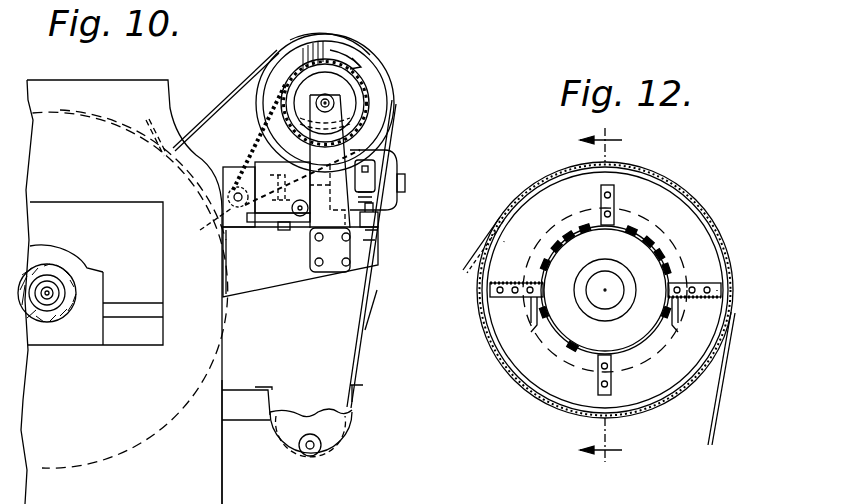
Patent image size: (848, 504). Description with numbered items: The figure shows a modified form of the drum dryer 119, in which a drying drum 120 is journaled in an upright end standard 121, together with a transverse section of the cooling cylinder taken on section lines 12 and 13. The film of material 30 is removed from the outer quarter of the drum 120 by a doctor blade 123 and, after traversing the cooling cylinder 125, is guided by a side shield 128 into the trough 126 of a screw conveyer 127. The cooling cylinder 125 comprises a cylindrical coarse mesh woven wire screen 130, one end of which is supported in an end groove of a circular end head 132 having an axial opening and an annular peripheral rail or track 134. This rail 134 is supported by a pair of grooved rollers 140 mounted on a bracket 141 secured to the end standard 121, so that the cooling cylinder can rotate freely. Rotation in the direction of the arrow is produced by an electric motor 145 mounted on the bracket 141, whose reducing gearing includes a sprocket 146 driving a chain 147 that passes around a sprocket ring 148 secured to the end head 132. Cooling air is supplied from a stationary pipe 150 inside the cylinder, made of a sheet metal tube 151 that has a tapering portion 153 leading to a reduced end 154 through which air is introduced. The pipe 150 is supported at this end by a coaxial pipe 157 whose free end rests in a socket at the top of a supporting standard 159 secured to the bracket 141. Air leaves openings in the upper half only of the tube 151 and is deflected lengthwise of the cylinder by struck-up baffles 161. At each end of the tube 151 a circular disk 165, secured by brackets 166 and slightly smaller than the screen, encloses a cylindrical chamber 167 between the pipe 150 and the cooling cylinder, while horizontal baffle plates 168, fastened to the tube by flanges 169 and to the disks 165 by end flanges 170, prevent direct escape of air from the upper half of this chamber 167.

In FIG. 10, the section line 12 is at (303, 442).
In FIG. 12, the section line 13 is at (614, 295).
In FIG. 10, the film of material 30 is at (228, 100).
In FIG. 12, the film of material 30 is at (518, 197).
In FIG. 10, the drum dryer 119 is at (107, 80).
In FIG. 10, the drying drum 120 is at (84, 114).
In FIG. 10, the end standard 121 is at (90, 204).
In FIG. 10, the doctor blade 123 is at (158, 117).
In FIG. 10, the cooling cylinder 125 is at (380, 52).
In FIG. 10, the trough 126 is at (352, 425).
In FIG. 10, the screw conveyer 127 is at (318, 402).
In FIG. 10, the side shield 128 is at (372, 332).
In FIG. 12, the coarse mesh woven wire screen 130 is at (560, 175).
In FIG. 10, the circular end head 132 is at (372, 82).
In FIG. 10, the peripheral rail or track 134 is at (372, 23).
In FIG. 10, the grooved rollers 140 is at (398, 158).
In FIG. 10, the bracket 141 is at (300, 262).
In FIG. 10, the electric motor 145 is at (406, 183).
In FIG. 10, the sprocket 146 is at (228, 210).
In FIG. 10, the chain 147 is at (262, 140).
In FIG. 10, the sprocket ring 148 is at (335, 102).
In FIG. 12, the stationary air pipe 150 is at (646, 338).
In FIG. 12, the sheet metal tube 151 is at (560, 332).
In FIG. 12, the tapering portion 153 is at (605, 289).
In FIG. 12, the reduced end 154 is at (590, 280).
In FIG. 10, the coaxial supporting pipe 157 is at (334, 108).
In FIG. 10, the supporting standard 159 is at (346, 250).
In FIG. 12, the baffles 161 is at (650, 230).
In FIG. 12, the circular disk 165 is at (640, 190).
In FIG. 12, the brackets 166 is at (616, 201).
In FIG. 12, the cylindrical chamber 167 is at (692, 246).
In FIG. 12, the horizontal baffle plates 168 is at (694, 288).
In FIG. 12, the flanges 169 is at (677, 328).
In FIG. 12, the end flanges 170 is at (735, 298).